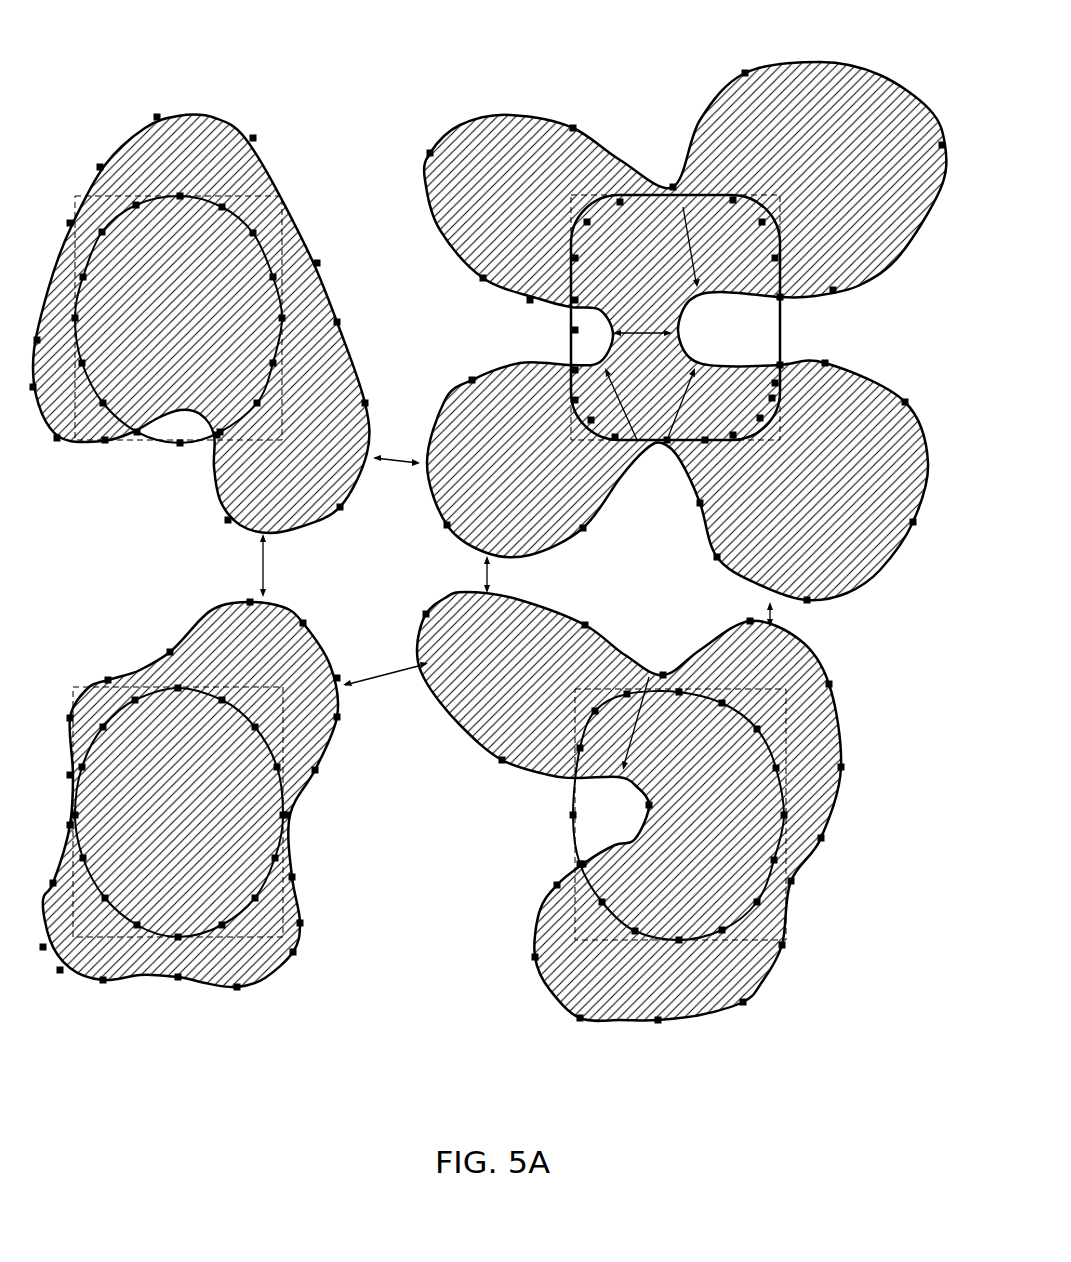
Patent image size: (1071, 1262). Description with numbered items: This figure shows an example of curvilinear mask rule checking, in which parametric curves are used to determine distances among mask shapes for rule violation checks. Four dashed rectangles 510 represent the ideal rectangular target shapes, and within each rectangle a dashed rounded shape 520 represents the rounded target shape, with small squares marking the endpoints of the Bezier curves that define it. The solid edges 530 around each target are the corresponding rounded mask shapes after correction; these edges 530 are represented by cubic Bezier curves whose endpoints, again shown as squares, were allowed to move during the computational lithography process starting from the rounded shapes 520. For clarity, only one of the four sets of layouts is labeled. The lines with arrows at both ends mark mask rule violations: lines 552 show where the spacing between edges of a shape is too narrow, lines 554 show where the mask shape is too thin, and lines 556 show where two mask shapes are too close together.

The dashed rectangle 510 is at (246, 196).
The dashed rounded shape 520 is at (272, 253).
The solid edge 530 is at (186, 116).
The line 552 is at (808, 365).
The line 554 is at (664, 488).
The line 556 is at (517, 571).